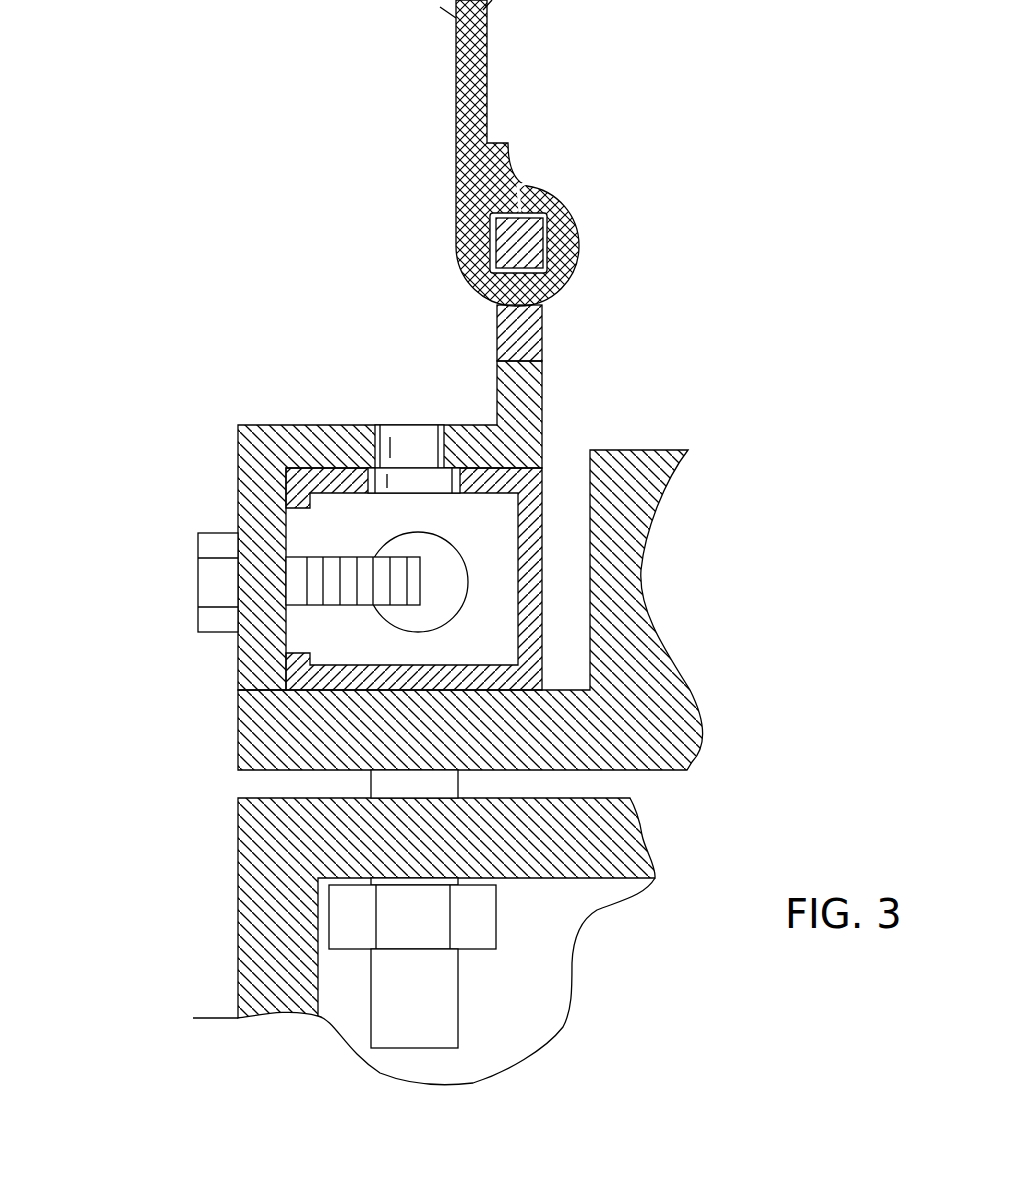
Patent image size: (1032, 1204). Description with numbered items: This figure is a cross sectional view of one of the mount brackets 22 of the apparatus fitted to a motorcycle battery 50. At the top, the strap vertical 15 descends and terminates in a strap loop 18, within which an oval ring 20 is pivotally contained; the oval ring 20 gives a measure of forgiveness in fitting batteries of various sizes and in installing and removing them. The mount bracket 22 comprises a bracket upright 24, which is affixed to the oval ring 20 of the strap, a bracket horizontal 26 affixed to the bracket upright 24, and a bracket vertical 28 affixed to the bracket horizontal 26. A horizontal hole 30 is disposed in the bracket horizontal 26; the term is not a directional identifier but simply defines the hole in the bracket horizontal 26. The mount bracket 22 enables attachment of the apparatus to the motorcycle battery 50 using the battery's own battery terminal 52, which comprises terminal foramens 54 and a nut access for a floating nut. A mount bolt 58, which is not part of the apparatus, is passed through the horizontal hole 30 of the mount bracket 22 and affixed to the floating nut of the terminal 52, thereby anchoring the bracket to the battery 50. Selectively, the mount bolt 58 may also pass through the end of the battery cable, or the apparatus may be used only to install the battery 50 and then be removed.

The strap vertical 15 is at (456, 100).
The strap loop 18 is at (580, 233).
The oval ring 20 is at (543, 333).
The mount bracket 22 is at (337, 483).
The bracket upright 24 is at (497, 398).
The bracket horizontal 26 is at (293, 425).
The bracket vertical 28 is at (238, 470).
The horizontal hole 30 is at (520, 228).
The battery 50 is at (663, 676).
The battery terminal 52 is at (545, 577).
The terminal foramen 54 is at (462, 520).
The mount bolt 58 is at (198, 600).